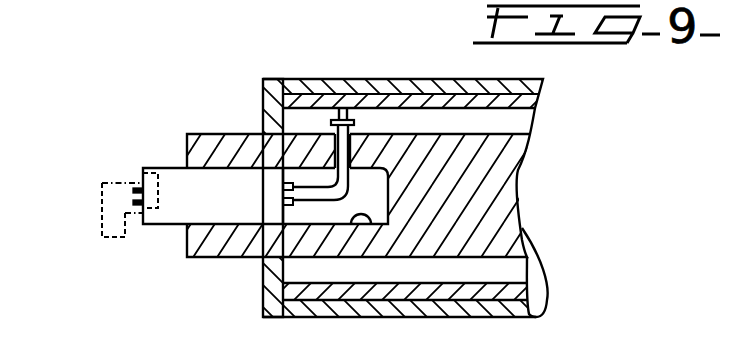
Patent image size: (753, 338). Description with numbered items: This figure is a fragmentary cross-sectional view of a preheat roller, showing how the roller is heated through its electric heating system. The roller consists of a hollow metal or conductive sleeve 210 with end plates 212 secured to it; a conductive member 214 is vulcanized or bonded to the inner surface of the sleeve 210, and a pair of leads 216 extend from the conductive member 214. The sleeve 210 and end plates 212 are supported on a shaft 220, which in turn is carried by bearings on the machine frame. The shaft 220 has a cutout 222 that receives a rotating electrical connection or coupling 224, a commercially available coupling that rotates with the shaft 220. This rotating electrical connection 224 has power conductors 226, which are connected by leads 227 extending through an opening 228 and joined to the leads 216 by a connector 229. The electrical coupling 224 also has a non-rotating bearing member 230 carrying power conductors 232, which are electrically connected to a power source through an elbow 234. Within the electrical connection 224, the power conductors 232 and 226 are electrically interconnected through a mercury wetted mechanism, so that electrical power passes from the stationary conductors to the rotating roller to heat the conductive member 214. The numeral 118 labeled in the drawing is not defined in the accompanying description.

The housing 118 is at (244, 60).
The sleeve 210 is at (405, 79).
The end plate 212 is at (263, 94).
The conductive member 214 is at (537, 100).
The leads 216 is at (333, 122).
The shaft 220 is at (246, 258).
The cutout 222 is at (372, 225).
The rotating electrical connection 224 is at (167, 153).
The power conductors 226 is at (284, 197).
The leads 227 is at (320, 200).
The opening 228 is at (350, 130).
The connector 229 is at (355, 118).
The non-rotating bearing member 230 is at (133, 172).
The power conductors 232 is at (138, 190).
The elbow 234 is at (102, 196).